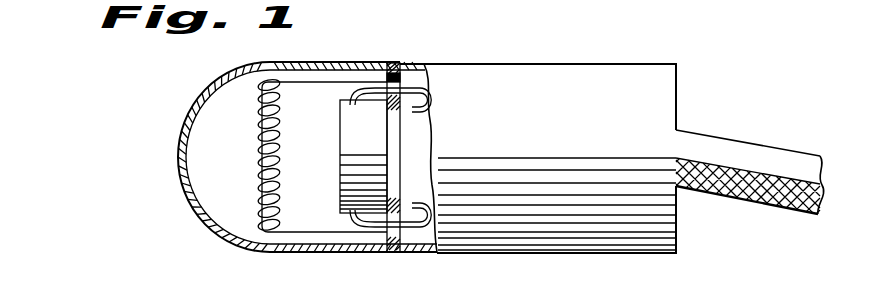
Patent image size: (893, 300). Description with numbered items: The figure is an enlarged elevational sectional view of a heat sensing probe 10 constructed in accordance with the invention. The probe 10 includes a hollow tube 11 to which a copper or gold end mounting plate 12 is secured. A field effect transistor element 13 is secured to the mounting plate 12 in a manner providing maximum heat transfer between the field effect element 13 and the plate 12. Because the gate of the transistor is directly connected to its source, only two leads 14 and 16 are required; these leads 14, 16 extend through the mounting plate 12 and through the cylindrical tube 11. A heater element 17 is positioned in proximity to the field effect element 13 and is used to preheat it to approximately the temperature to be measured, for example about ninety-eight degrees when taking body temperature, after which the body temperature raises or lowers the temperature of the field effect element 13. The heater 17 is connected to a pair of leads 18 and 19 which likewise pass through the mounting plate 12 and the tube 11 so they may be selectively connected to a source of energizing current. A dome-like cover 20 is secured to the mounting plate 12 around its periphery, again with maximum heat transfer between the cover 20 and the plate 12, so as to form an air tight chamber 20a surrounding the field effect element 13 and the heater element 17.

The heat sensing probe 10 is at (430, 57).
The hollow tube 11 is at (566, 40).
The end mounting plate 12 is at (393, 62).
The field effect transistor element 13 is at (340, 168).
The lead 14 is at (422, 216).
The lead 16 is at (420, 118).
The heater element 17 is at (260, 162).
The lead 18 is at (426, 72).
The lead 19 is at (424, 234).
The dome-like cover 20 is at (186, 200).
The air tight chamber 20a is at (240, 141).